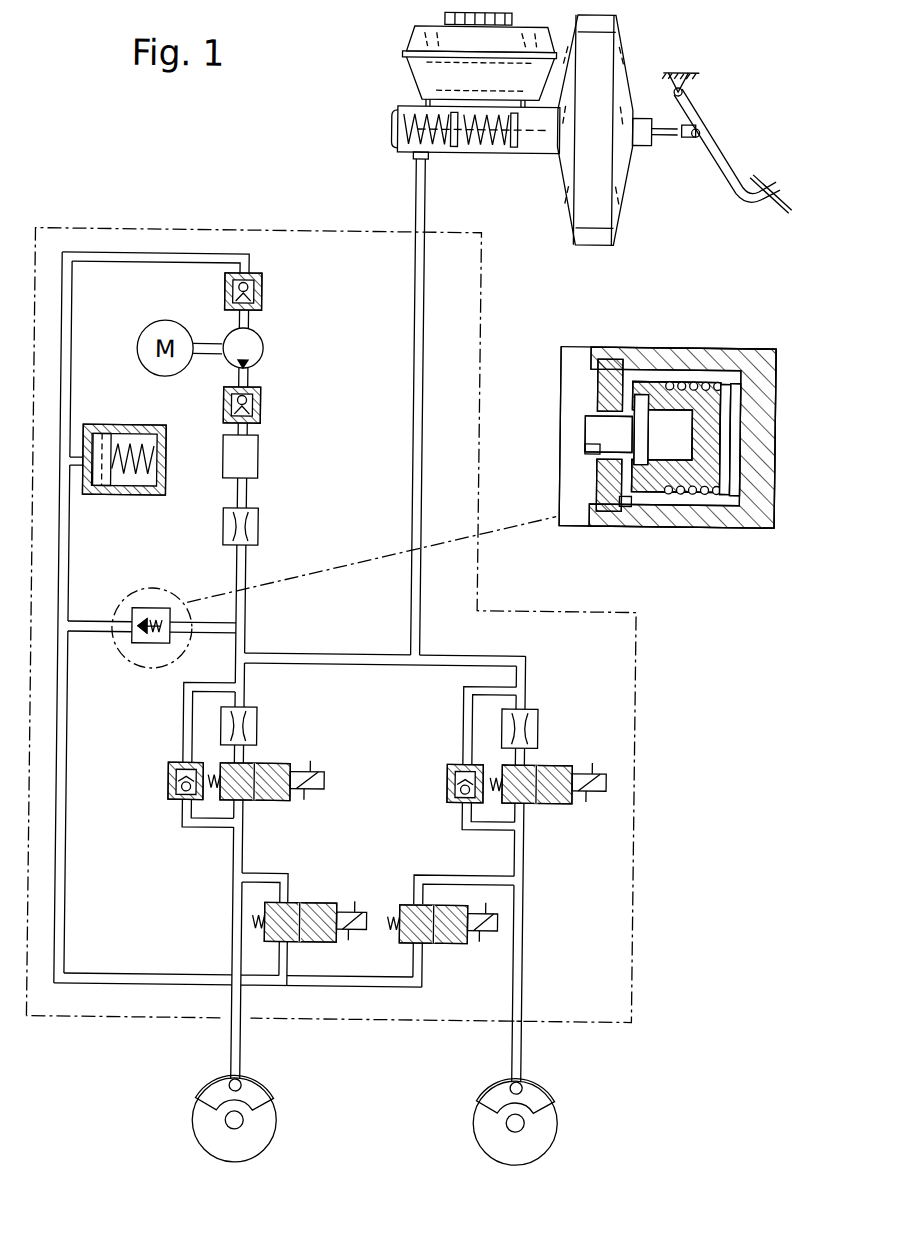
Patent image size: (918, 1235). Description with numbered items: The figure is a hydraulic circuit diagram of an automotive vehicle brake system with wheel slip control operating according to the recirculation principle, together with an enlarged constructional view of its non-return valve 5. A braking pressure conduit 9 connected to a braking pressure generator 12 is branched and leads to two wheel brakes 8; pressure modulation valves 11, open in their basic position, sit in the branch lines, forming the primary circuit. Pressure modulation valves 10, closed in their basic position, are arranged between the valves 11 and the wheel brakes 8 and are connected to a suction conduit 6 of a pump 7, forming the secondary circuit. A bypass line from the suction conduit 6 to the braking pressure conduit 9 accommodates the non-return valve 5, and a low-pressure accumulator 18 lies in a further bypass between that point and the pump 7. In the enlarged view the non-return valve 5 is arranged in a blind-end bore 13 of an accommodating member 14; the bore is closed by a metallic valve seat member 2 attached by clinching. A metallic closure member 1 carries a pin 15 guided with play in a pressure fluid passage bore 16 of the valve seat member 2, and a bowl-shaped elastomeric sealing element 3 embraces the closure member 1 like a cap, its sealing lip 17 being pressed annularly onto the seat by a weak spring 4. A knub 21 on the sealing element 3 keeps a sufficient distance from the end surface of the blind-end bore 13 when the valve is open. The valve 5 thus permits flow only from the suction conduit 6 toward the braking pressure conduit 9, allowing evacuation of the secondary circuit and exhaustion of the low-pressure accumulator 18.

The closure member 1 is at (680, 433).
The valve seat member 2 is at (605, 360).
The elastomeric sealing element 3 is at (688, 382).
The spring 4 is at (728, 480).
The non-return valve 5 is at (118, 657).
The suction conduit 6 is at (68, 549).
The pump 7 is at (258, 350).
The wheel brake 8 is at (278, 1083).
The braking pressure conduit 9 is at (411, 491).
The pressure modulation valve 10 is at (320, 889).
The pressure modulation valve 11 is at (270, 763).
The braking pressure generator 12 is at (386, 120).
The blind-end bore 13 is at (734, 408).
The accommodating member 14 is at (755, 468).
The pin 15 is at (598, 424).
The pressure fluid passage bore 16 is at (583, 448).
The sealing lip 17 is at (621, 502).
The low-pressure accumulator 18 is at (110, 426).
The knub 21 is at (718, 474).